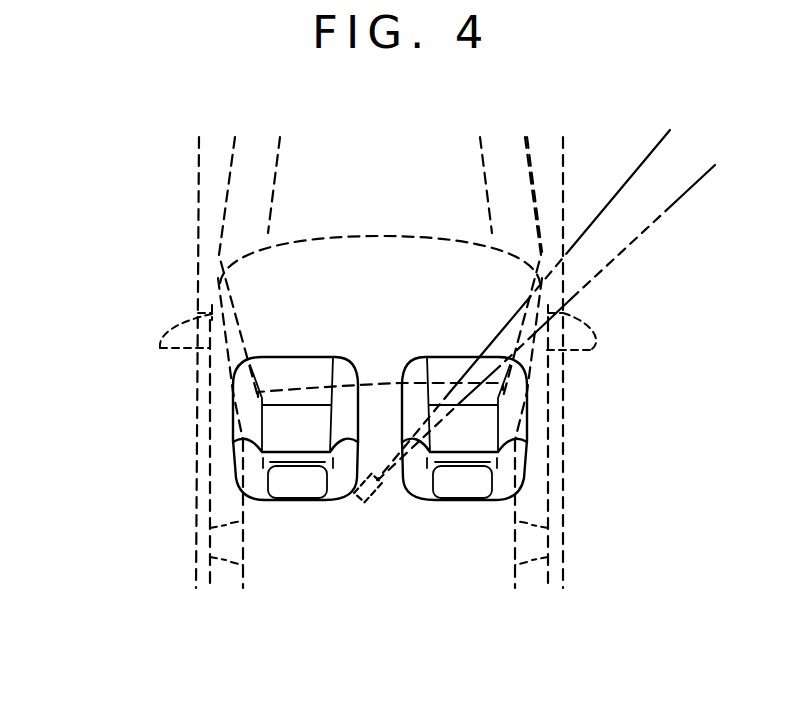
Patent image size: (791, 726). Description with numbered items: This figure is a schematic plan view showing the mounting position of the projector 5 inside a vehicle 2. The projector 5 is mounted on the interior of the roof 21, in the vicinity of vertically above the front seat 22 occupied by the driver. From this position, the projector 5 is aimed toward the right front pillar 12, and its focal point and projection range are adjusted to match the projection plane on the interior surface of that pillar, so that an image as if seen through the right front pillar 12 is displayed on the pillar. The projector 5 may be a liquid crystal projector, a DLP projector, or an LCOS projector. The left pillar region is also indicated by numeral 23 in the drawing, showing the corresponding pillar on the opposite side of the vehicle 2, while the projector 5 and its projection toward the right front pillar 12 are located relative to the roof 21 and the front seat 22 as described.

The vehicle 2 is at (170, 280).
The projector 5 is at (355, 503).
The right front pillar 12 is at (560, 365).
The roof 21 is at (398, 558).
The front seat 22 is at (463, 487).
The pillar 23 is at (507, 330).